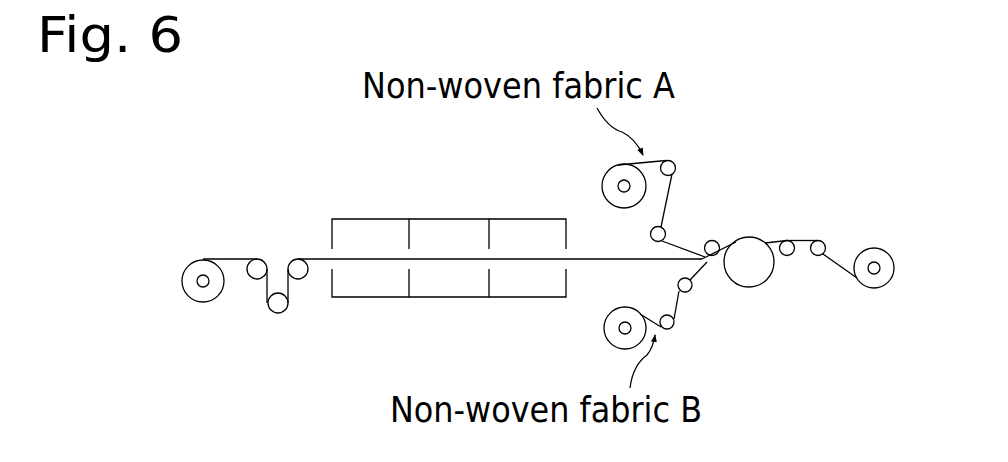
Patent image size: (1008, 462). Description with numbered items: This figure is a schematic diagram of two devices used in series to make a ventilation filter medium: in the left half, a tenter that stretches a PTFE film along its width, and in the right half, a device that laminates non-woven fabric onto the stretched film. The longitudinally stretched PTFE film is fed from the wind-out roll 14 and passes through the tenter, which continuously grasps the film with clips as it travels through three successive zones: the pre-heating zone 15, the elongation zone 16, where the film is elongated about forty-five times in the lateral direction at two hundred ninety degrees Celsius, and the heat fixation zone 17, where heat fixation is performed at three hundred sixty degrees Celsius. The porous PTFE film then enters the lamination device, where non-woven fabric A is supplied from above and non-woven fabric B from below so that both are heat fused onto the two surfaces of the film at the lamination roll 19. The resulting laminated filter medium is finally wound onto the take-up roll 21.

The wind-out roll 14 is at (189, 301).
The pre-heating zone 15 is at (365, 299).
The elongation zone 16 is at (445, 299).
The heat fixation zone 17 is at (523, 299).
The lamination roll 19 is at (745, 289).
The take-up roll 21 is at (866, 290).